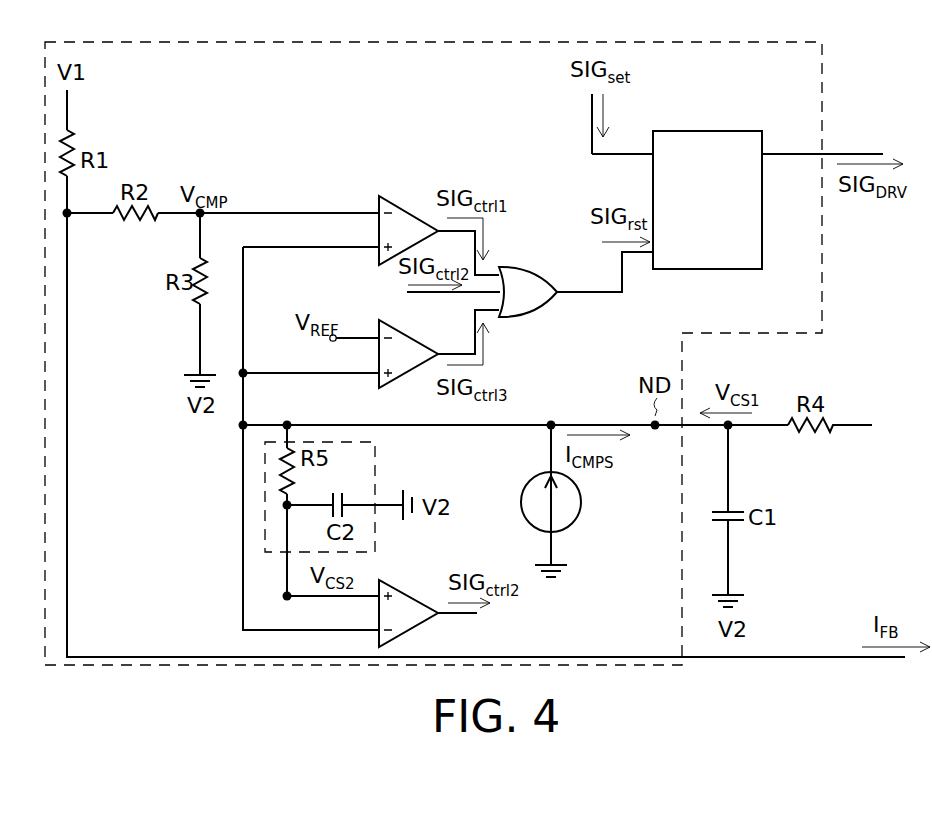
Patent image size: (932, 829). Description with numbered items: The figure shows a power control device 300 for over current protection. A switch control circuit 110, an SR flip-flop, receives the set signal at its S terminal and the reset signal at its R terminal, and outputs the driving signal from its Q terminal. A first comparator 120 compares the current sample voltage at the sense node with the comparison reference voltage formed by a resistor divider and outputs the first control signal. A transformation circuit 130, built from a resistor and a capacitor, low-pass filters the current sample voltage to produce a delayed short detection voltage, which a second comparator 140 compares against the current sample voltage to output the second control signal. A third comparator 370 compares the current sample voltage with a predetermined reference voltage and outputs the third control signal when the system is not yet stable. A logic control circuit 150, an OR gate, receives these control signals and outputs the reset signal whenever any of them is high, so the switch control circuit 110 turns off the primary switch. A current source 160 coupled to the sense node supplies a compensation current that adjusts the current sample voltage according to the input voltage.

The power control device 300 is at (730, 40).
The switch control circuit 110 is at (665, 131).
The first comparator 120 is at (408, 212).
The third comparator 370 is at (428, 334).
The logic control circuit 150 is at (532, 311).
The transformation circuit 130 is at (375, 446).
The second comparator 140 is at (410, 598).
The current source 160 is at (572, 526).